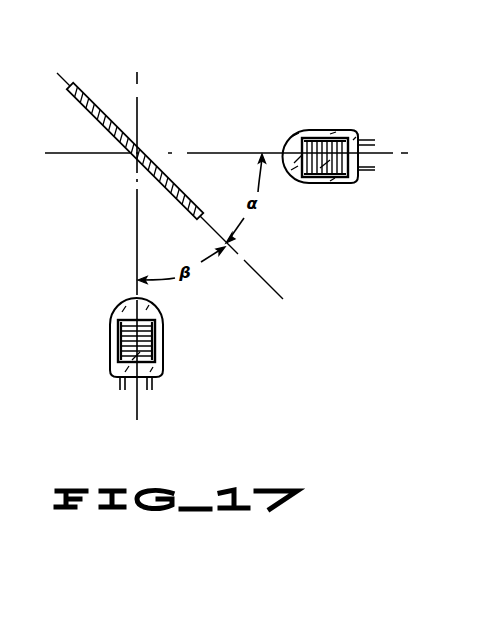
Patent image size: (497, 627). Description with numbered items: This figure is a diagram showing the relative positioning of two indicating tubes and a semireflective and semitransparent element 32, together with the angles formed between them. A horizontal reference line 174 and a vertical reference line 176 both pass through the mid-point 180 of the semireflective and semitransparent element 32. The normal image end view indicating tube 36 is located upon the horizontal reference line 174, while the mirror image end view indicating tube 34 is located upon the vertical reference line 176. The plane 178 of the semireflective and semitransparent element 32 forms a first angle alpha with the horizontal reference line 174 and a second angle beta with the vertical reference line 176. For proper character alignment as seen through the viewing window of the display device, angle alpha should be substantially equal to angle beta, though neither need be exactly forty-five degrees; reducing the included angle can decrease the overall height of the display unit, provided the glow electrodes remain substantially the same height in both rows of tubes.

The semireflective and semitransparent element 32 is at (88, 97).
The mirror image end view indicating tube 34 is at (112, 330).
The normal image end view indicating tube 36 is at (316, 130).
The horizontal reference line 174 is at (73, 155).
The vertical reference line 176 is at (134, 228).
The plane of the semireflective and semitransparent element 178 is at (263, 285).
The mid-point of the semireflective and semitransparent element 180 is at (139, 152).